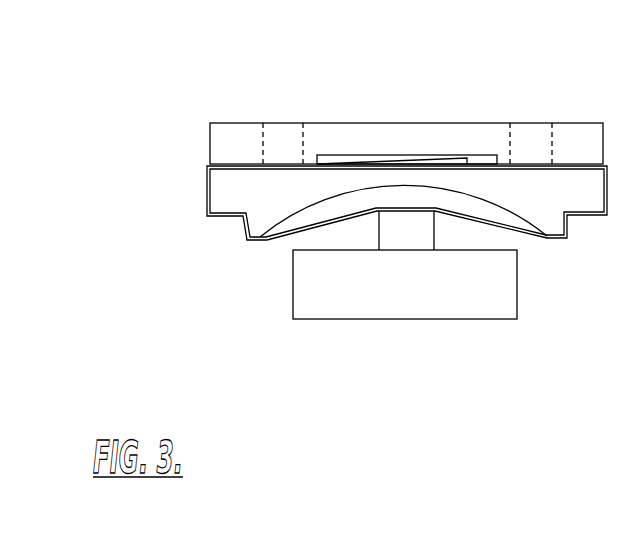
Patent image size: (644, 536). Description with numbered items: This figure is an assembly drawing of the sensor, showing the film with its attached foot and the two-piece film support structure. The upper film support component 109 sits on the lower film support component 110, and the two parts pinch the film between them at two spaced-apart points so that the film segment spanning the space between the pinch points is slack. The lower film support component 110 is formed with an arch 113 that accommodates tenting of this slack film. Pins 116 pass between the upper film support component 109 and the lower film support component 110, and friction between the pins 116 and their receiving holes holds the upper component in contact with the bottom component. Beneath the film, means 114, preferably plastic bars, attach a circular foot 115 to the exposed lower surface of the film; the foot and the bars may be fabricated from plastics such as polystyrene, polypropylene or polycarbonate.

The top film support component 109 is at (210, 146).
The bottom film support component 110 is at (207, 190).
The arch 113 is at (420, 187).
The means 114 is at (435, 230).
The circular foot 115 is at (411, 301).
The pins 116 is at (527, 123).